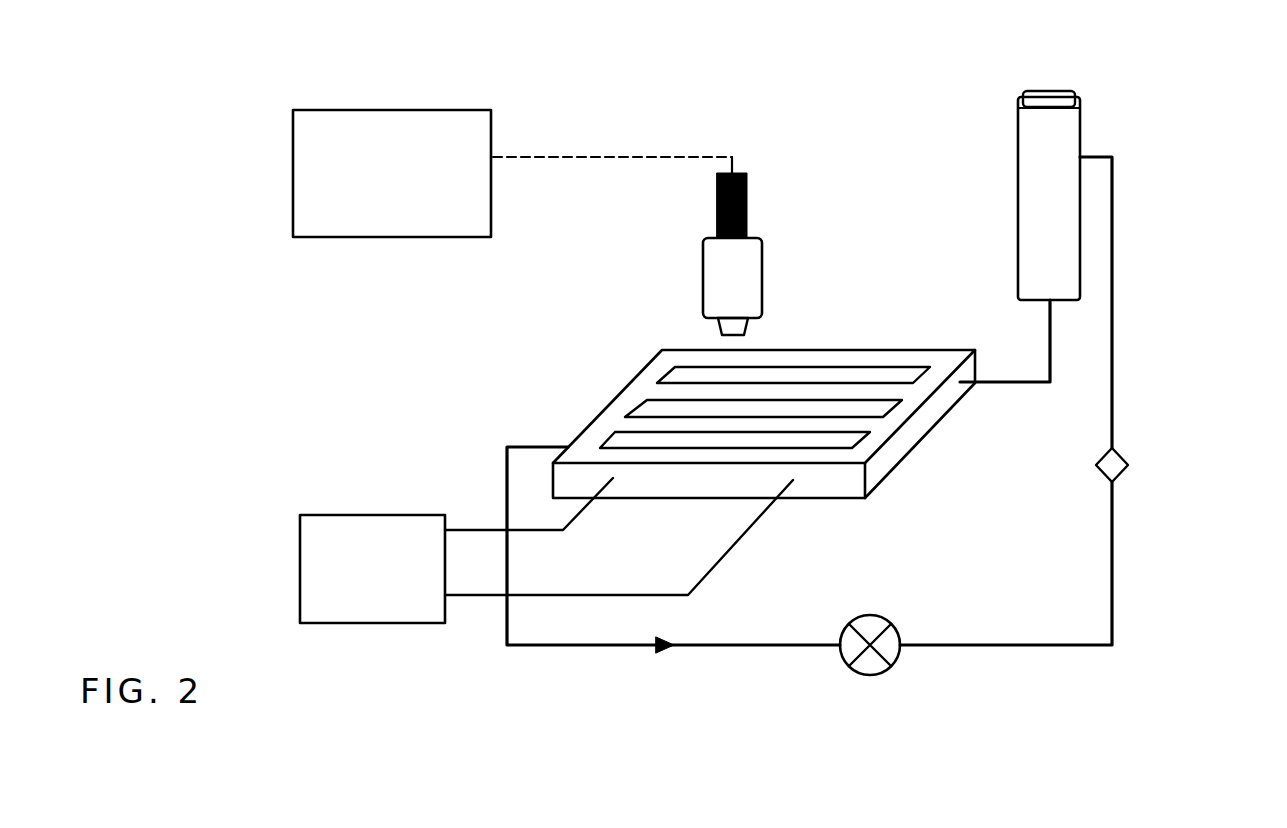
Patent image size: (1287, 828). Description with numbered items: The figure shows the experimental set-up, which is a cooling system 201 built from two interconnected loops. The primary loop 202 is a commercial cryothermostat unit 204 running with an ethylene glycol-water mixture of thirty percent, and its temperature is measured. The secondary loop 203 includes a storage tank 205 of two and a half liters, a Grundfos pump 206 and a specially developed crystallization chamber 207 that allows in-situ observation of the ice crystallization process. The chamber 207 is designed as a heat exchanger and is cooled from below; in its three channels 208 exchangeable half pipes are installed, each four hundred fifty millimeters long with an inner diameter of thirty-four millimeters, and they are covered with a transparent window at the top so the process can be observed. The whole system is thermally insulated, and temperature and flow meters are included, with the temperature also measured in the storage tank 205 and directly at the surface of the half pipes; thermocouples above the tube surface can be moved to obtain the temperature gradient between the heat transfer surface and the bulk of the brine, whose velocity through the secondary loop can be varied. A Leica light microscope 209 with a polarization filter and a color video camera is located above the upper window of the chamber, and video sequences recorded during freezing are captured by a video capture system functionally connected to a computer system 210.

The cooling system 201 is at (1135, 100).
The primary loop 202 is at (472, 527).
The secondary loop 203 is at (1115, 542).
The cryothermostat unit 204 is at (405, 584).
The storage tank 205 is at (1030, 137).
The pump 206 is at (895, 662).
The crystallization chamber 207 is at (843, 350).
The channels 208 is at (673, 372).
The light microscope 209 is at (762, 253).
The computer system 210 is at (436, 184).